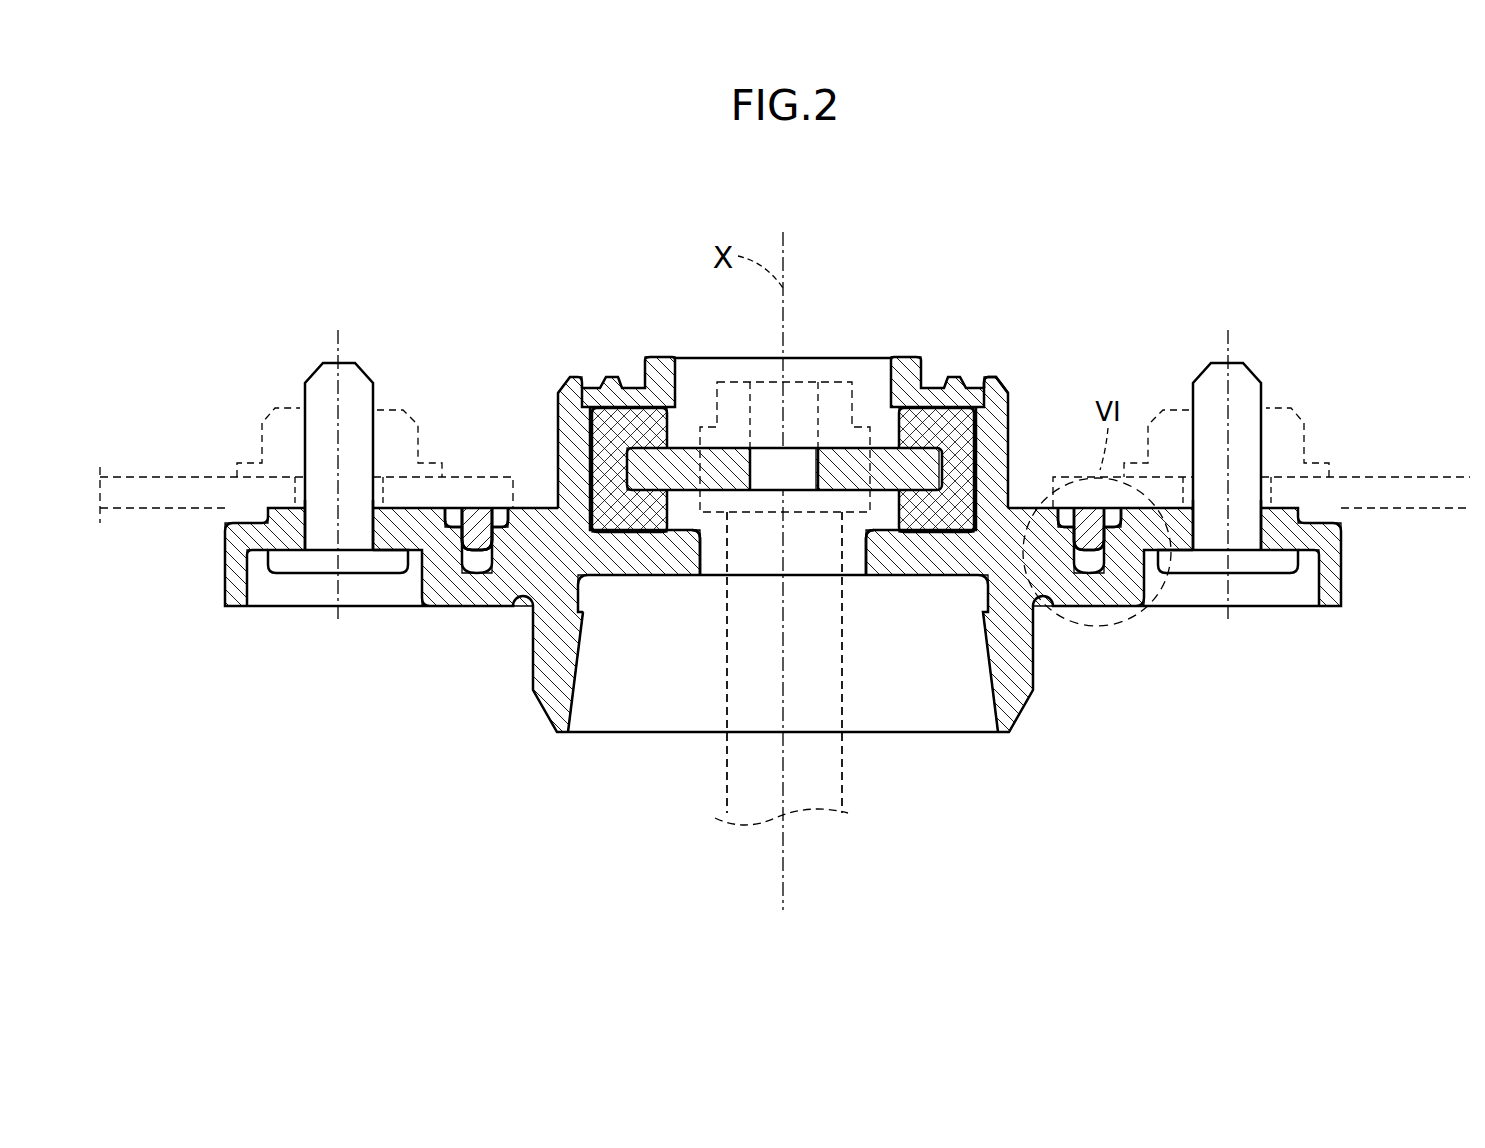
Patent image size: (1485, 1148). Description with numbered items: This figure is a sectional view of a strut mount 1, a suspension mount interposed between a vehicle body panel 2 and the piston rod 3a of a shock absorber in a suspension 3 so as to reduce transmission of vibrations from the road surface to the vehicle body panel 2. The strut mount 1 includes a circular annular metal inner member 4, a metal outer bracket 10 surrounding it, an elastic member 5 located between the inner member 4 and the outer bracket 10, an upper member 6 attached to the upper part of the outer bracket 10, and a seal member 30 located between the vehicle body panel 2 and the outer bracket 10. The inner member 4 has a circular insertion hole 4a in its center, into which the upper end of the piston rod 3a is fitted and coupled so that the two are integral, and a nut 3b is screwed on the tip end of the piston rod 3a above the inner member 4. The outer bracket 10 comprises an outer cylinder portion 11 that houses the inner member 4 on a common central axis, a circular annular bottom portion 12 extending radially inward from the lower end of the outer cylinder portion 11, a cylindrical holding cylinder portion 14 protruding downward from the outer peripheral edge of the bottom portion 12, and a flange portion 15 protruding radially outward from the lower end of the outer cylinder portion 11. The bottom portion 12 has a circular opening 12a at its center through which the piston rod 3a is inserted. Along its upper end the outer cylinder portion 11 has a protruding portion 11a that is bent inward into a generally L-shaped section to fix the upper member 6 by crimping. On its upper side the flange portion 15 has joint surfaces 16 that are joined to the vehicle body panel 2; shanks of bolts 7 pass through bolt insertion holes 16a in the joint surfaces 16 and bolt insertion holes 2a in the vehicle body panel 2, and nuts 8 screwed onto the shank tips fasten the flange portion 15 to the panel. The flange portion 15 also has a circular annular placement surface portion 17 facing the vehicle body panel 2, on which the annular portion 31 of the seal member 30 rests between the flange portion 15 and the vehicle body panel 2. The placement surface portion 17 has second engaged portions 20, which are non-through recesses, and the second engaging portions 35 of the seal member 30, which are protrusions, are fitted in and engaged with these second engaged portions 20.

The strut mount 1 is at (1104, 316).
The vehicle body panel 2 is at (1432, 476).
The bolt insertion hole 2a is at (378, 472).
The suspension 3 is at (784, 662).
The piston rod 3a is at (825, 765).
The nut 3b is at (832, 393).
The inner member 4 is at (683, 475).
The insertion hole 4a is at (768, 460).
The elastic member 5 is at (627, 510).
The upper member 6 is at (656, 360).
The bolt 7 is at (357, 563).
The nut 8 is at (287, 437).
The outer bracket 10 is at (560, 438).
The outer cylinder portion 11 is at (997, 426).
The protruding portion 11a is at (998, 392).
The bottom portion 12 is at (910, 577).
The opening 12a is at (856, 560).
The holding cylinder portion 14 is at (1023, 685).
The flange portion 15 is at (226, 542).
The joint surface 16 is at (408, 505).
The bolt insertion hole 16a is at (316, 534).
The placement surface portion 17 is at (455, 506).
The second engaged portion 20 is at (477, 563).
The seal member 30 is at (477, 520).
The annular portion 31 is at (470, 503).
The second engaging portion 35 is at (453, 530).